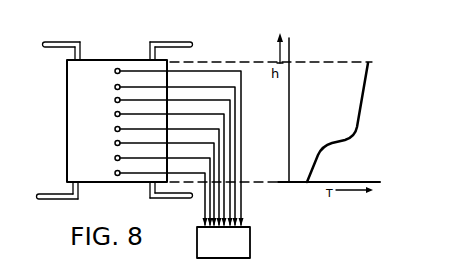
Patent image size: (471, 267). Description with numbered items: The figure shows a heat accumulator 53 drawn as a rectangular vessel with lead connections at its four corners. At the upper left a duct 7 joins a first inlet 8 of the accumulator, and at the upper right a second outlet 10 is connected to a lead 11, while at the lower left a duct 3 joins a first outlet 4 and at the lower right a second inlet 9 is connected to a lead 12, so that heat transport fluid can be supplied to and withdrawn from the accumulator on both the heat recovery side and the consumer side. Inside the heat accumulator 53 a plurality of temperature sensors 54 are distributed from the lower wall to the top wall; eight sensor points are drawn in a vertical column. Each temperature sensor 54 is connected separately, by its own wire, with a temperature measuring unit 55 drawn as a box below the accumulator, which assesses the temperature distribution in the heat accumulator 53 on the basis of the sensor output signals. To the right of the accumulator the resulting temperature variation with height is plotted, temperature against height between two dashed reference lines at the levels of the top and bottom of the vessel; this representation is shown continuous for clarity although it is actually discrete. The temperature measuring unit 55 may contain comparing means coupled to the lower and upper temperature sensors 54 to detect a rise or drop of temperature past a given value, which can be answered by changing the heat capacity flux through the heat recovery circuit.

The duct 3 is at (64, 194).
The first outlet 4 is at (80, 185).
The duct 7 is at (63, 43).
The first inlet 8 is at (83, 54).
The second inlet 9 is at (149, 194).
The second outlet 10 is at (149, 56).
The upper right lead 11 is at (182, 42).
The lower right lead 12 is at (185, 199).
The heat accumulator 53 is at (67, 133).
The temperature sensors 54 is at (113, 157).
The temperature measuring unit 55 is at (240, 248).